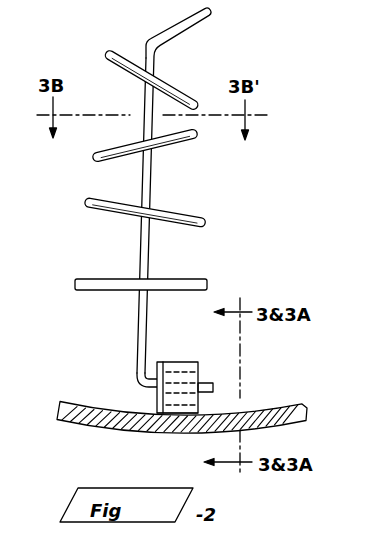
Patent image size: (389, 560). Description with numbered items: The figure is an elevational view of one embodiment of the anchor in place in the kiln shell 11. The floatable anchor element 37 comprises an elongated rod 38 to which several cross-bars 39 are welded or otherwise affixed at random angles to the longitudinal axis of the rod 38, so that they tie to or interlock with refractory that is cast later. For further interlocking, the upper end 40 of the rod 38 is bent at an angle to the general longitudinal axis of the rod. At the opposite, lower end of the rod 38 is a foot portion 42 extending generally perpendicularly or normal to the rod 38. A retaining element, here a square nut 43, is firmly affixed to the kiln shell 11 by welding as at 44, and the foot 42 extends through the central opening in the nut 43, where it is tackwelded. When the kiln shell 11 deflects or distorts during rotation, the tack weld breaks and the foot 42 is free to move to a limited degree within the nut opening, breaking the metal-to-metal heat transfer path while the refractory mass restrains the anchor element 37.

The kiln shell 11 is at (80, 421).
The floatable anchor element 37 is at (108, 91).
The elongated rod 38 is at (154, 63).
The cross-bars 39 is at (167, 148).
The upper end 40 is at (182, 28).
The foot portion 42 is at (136, 389).
The square nut 43 is at (200, 362).
The weld 44 is at (158, 419).